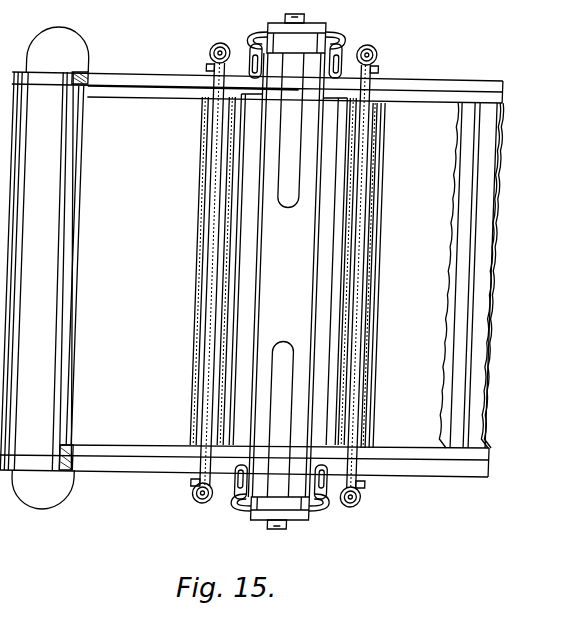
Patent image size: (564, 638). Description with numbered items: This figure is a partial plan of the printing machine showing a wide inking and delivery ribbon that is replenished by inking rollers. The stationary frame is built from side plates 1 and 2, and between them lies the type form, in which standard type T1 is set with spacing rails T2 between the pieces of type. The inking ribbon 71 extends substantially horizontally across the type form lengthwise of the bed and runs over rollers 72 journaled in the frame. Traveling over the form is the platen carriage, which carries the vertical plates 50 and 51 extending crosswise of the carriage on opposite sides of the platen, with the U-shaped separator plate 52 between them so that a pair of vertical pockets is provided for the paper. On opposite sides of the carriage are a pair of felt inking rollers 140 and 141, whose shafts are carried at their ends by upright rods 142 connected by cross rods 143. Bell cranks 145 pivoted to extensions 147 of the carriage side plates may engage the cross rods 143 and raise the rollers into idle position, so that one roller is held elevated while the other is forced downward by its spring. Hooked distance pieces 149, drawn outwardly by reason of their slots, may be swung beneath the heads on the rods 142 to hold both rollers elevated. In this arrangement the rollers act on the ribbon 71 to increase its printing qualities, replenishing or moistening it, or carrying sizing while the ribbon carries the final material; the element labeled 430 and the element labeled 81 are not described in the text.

The side plate 1 is at (117, 73).
The side plate 2 is at (126, 467).
The platen roller 430 is at (45, 268).
The inking ribbon 71 is at (107, 265).
The right paper table plate 81 is at (407, 275).
The rollers 72 is at (77, 443).
The felt inking roller 140 is at (371, 293).
The felt inking roller 141 is at (196, 307).
The upright rods 142 is at (220, 43).
The cross rods 143 is at (214, 215).
The bell cranks 145 is at (208, 68).
The extensions 147 is at (367, 45).
The hooked distance pieces 149 is at (243, 514).
The vertical plate 50 is at (333, 219).
The vertical plate 51 is at (228, 329).
The U-shaped separator plate 52 is at (288, 271).
The standard type T1 is at (470, 105).
The spacing rails T2 is at (482, 105).